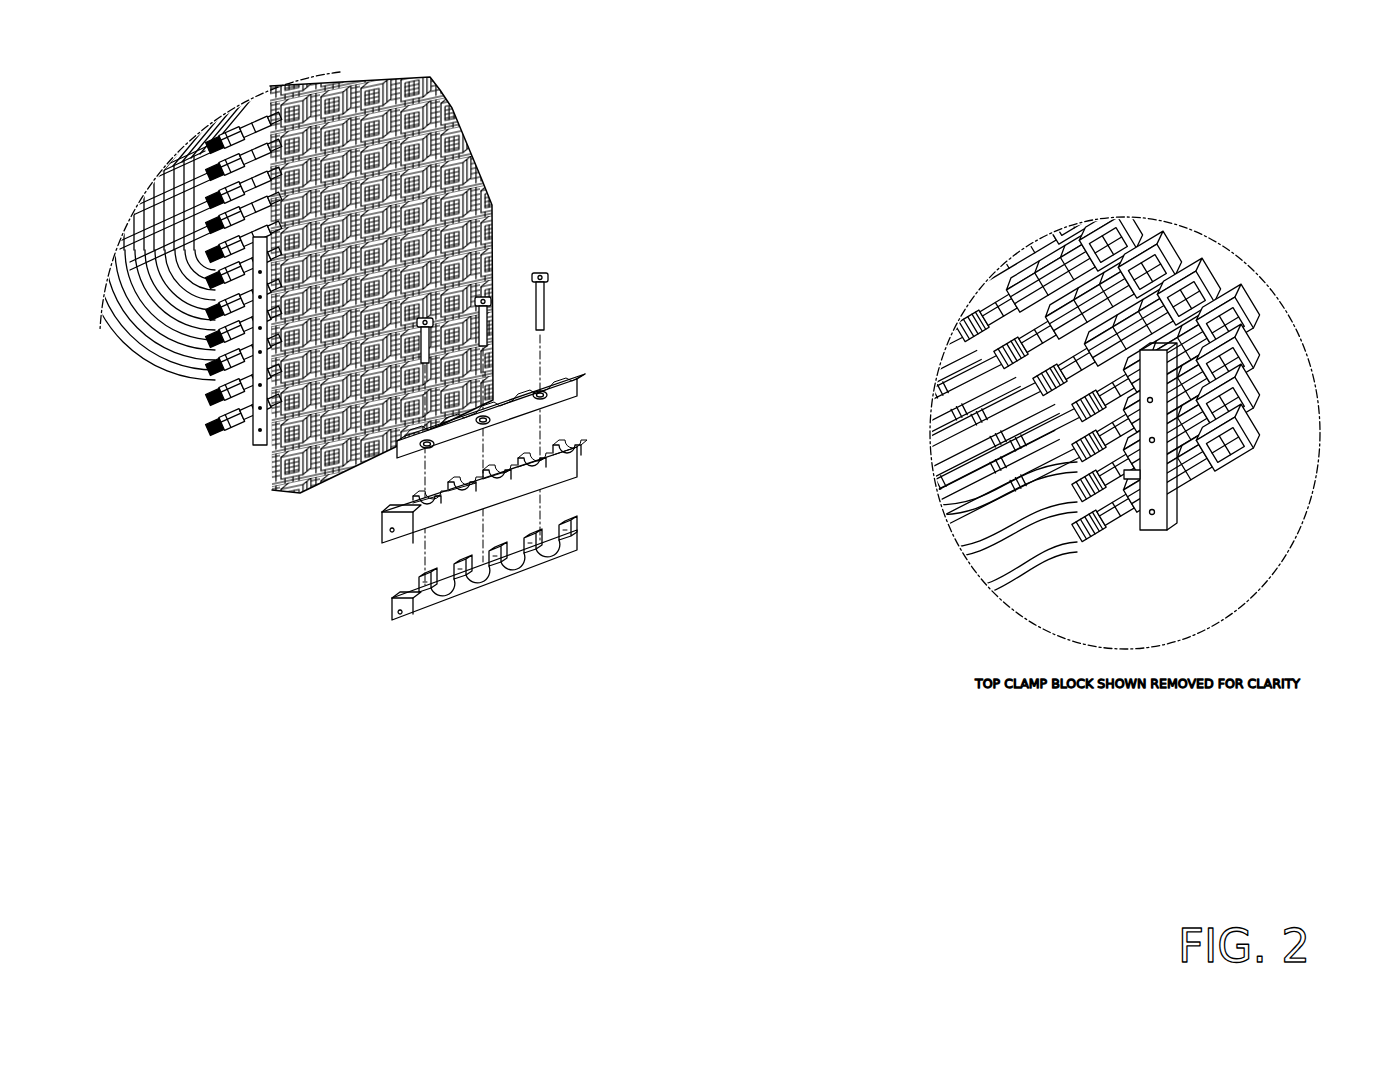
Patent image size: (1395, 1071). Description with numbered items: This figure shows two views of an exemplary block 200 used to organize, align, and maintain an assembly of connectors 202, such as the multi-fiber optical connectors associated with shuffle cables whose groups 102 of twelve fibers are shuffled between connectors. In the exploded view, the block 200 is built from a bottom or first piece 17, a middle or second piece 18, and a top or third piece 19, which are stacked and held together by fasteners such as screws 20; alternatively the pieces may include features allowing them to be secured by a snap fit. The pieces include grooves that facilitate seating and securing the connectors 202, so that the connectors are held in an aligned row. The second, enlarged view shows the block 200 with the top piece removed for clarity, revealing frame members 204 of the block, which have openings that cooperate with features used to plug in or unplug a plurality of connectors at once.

The groups of fibers 102 is at (186, 393).
The connectors 202 is at (322, 490).
The block 200 is at (785, 435).
The frame members 204 is at (1150, 522).
The screws 20 is at (553, 276).
The third piece 19 is at (573, 382).
The second piece 18 is at (581, 459).
The first piece 17 is at (517, 572).